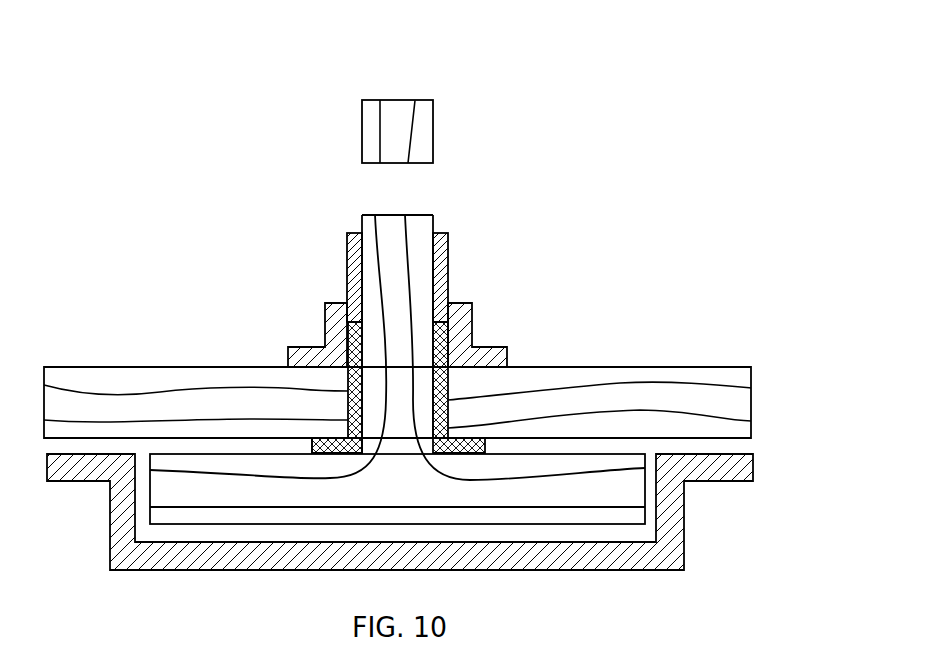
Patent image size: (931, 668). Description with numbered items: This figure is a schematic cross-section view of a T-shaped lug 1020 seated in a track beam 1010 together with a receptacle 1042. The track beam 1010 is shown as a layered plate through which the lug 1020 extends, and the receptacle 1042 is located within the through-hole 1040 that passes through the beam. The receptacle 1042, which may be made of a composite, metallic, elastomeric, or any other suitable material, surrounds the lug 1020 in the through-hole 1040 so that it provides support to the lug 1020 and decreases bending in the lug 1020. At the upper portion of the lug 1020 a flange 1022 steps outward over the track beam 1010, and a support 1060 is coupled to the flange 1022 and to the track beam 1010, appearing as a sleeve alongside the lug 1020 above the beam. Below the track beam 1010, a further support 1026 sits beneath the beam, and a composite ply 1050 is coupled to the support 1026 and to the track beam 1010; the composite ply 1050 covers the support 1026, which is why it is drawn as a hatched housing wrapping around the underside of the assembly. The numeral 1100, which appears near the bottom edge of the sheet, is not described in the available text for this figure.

The track beam 1010 is at (630, 368).
The T-shaped lug 1020 is at (458, 88).
The flange 1022 is at (357, 293).
The support 1026 is at (258, 525).
The through-hole 1040 is at (460, 383).
The receptacle 1042 is at (330, 455).
The composite ply 1050 is at (685, 514).
The support 1060 is at (347, 272).
The assembly 1100 is at (397, 441).